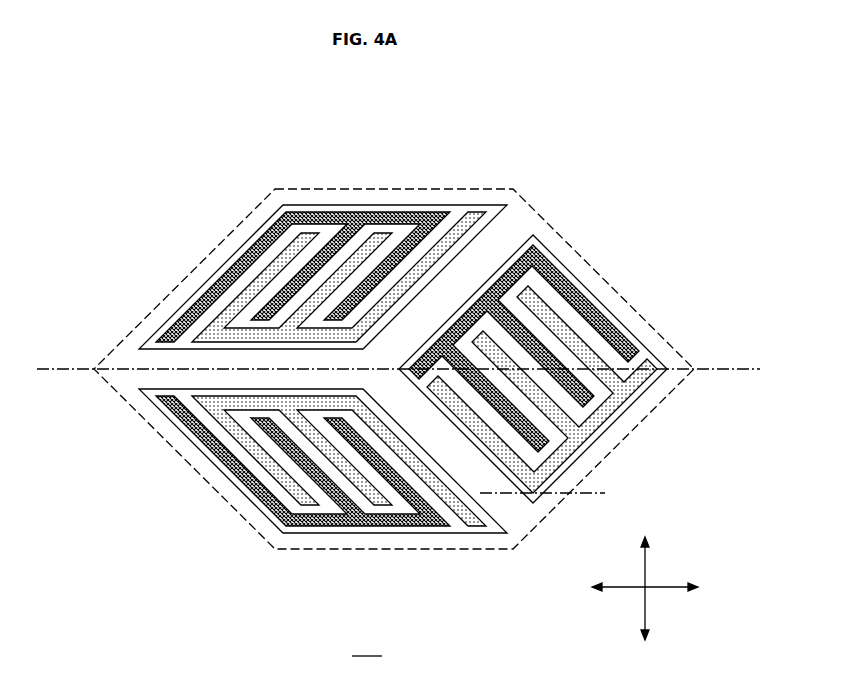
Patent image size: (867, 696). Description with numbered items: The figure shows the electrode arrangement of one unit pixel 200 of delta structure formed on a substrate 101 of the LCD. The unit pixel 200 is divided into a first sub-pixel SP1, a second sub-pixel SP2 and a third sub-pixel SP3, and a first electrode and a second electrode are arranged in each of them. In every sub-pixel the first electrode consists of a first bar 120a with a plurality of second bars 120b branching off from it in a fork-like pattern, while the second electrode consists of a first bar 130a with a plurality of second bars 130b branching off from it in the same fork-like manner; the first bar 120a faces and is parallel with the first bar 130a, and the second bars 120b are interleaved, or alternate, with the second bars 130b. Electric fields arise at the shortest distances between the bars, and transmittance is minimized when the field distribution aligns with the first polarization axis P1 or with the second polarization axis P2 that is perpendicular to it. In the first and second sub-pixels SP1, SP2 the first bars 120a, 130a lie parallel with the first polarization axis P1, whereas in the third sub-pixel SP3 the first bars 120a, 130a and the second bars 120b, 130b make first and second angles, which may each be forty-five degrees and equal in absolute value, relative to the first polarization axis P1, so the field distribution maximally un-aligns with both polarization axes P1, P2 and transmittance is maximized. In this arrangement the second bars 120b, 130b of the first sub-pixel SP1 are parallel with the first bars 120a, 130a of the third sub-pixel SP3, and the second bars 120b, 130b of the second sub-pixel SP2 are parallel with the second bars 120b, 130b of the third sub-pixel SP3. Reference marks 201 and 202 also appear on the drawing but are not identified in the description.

The unit pixel 200 is at (537, 210).
The first sub-pixel SP1 is at (382, 203).
The second sub-pixel SP2 is at (377, 535).
The third sub-pixel SP3 is at (622, 312).
The first bar of first electrode 120a is at (307, 212).
The second bars of first electrode 120b is at (250, 248).
The first bar of second electrode 130a is at (240, 397).
The second bars of second electrode 130b is at (405, 290).
The first polarization axis P1 is at (388, 479).
The second polarization axis P2 is at (647, 579).
The first cut line 201 is at (542, 487).
The second cut line 202 is at (540, 380).
The substrate 101 is at (367, 647).